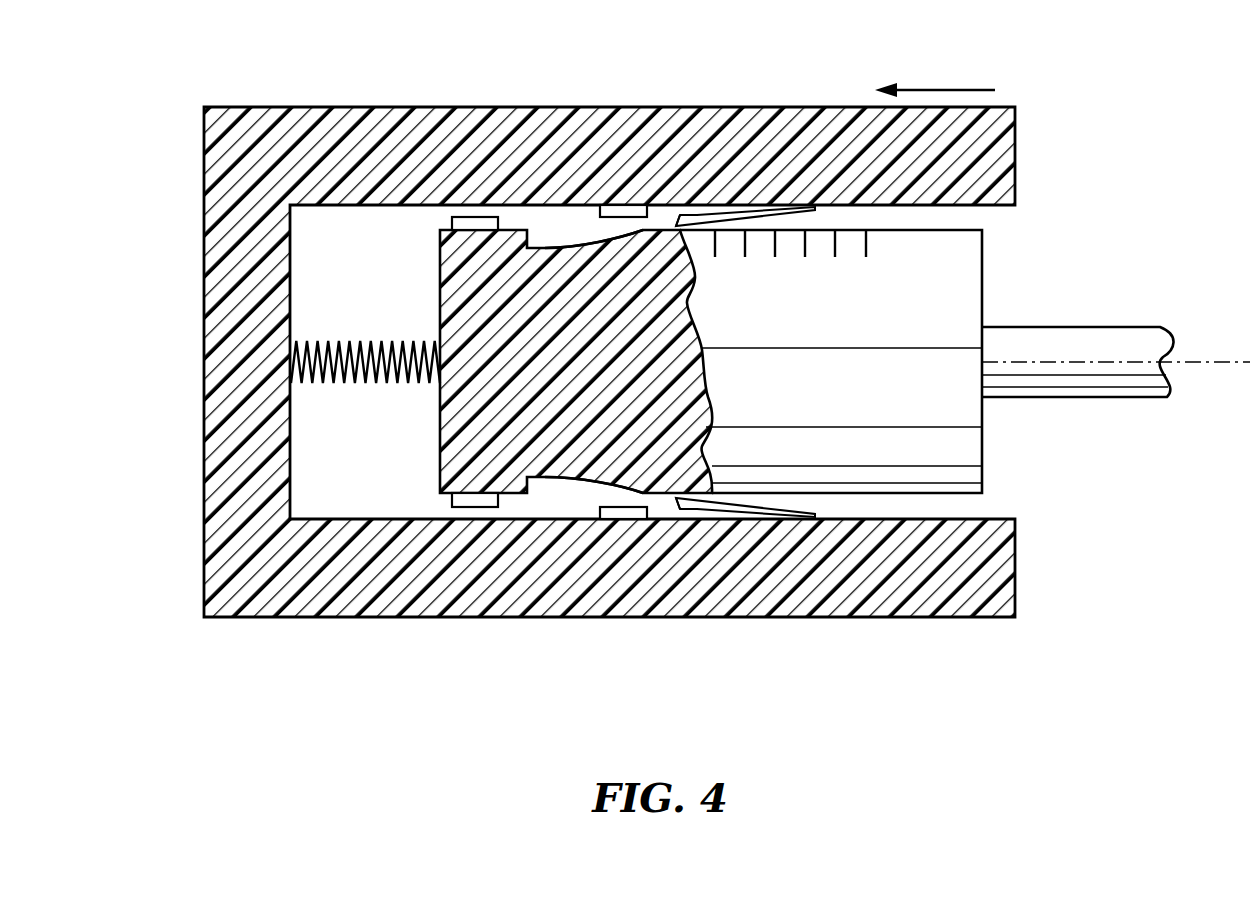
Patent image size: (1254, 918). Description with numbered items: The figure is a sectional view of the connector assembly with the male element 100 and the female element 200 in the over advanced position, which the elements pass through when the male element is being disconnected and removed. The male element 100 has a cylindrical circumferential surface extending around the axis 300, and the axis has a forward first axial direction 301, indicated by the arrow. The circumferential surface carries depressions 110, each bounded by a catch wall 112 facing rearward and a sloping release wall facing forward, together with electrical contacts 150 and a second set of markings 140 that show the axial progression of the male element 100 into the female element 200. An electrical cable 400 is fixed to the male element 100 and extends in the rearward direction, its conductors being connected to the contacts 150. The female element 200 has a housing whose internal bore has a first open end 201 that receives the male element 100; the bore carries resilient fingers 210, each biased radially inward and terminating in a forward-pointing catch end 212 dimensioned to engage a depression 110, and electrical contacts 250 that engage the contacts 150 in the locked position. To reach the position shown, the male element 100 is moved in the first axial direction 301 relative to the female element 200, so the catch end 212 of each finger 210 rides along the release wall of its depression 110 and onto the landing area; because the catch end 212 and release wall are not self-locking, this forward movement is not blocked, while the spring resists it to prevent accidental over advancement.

The male element 100 is at (983, 440).
The depression 110 is at (560, 241).
The catch wall 112 is at (526, 240).
The markings 140 is at (808, 253).
The electrical contacts 150 is at (464, 220).
The female element 200 is at (1020, 128).
The first open end 201 is at (1020, 508).
The finger 210 is at (728, 212).
The catch end 212 is at (674, 226).
The electrical contacts 250 is at (618, 207).
The axis 300 is at (1186, 363).
The first axial direction 301 is at (950, 87).
The electrical cable 400 is at (1135, 326).